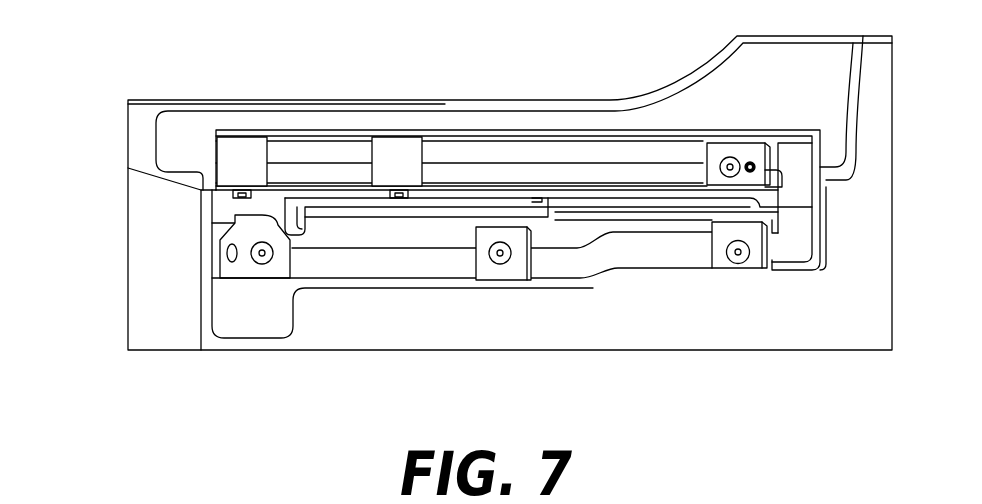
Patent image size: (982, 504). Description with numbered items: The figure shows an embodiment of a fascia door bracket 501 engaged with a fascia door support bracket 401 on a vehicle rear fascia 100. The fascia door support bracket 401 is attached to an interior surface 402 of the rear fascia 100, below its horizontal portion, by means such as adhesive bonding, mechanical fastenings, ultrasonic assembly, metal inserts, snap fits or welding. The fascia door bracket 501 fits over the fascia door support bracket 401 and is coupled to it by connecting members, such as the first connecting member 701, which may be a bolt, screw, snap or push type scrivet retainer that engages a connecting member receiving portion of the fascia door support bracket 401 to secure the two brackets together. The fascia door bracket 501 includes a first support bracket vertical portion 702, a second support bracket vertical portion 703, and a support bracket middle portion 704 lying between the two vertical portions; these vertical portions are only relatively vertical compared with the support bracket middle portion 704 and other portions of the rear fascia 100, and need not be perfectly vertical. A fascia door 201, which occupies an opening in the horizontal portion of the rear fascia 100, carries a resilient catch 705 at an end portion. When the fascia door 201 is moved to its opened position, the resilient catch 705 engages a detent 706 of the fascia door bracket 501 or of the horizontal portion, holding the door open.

The rear fascia 100 is at (150, 82).
The fascia door 201 is at (375, 212).
The fascia door support bracket 401 is at (413, 117).
The interior surface 402 is at (165, 260).
The fascia door bracket 501 is at (827, 233).
The first connecting member 701 is at (737, 264).
The first support bracket vertical portion 702 is at (305, 147).
The second support bracket vertical portion 703 is at (578, 262).
The support bracket middle portion 704 is at (792, 202).
The resilient catch 705 is at (553, 199).
The detent 706 is at (772, 196).